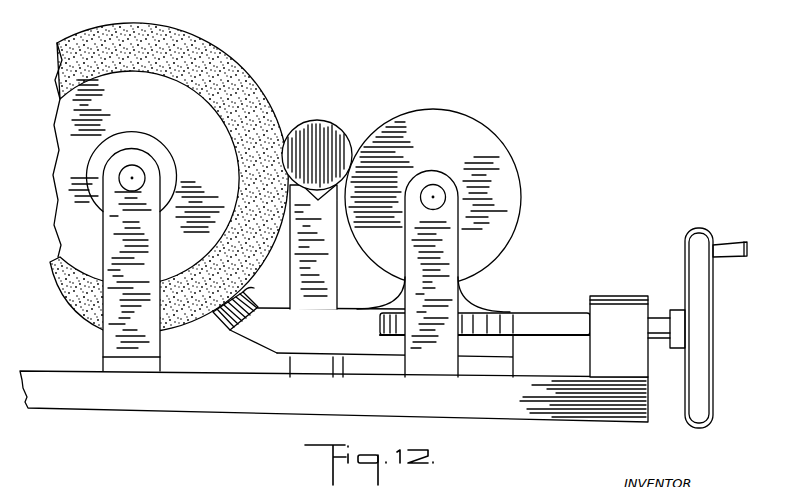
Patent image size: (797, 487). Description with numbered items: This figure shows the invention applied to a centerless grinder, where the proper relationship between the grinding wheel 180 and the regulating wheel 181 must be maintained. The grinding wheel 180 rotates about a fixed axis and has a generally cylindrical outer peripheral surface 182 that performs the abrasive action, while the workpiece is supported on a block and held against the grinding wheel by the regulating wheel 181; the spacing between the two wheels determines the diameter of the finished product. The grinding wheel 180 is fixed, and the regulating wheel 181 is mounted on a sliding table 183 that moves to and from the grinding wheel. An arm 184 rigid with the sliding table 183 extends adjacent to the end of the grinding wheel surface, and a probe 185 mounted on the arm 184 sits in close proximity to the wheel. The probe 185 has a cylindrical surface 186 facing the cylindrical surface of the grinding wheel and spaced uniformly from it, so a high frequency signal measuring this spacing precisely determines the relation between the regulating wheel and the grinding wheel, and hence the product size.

The grinding wheel 180 is at (203, 67).
The regulating wheel 181 is at (482, 142).
The outer peripheral surface 182 is at (262, 100).
The sliding table 183 is at (382, 345).
The arm 184 is at (258, 338).
The probe 185 is at (229, 329).
The cylindrical surface 186 is at (264, 289).